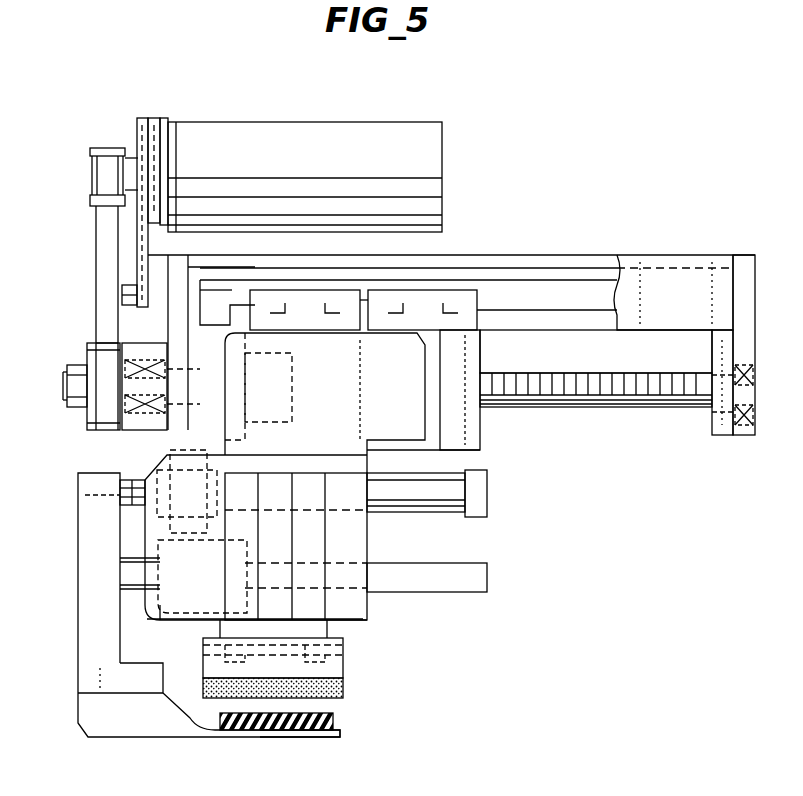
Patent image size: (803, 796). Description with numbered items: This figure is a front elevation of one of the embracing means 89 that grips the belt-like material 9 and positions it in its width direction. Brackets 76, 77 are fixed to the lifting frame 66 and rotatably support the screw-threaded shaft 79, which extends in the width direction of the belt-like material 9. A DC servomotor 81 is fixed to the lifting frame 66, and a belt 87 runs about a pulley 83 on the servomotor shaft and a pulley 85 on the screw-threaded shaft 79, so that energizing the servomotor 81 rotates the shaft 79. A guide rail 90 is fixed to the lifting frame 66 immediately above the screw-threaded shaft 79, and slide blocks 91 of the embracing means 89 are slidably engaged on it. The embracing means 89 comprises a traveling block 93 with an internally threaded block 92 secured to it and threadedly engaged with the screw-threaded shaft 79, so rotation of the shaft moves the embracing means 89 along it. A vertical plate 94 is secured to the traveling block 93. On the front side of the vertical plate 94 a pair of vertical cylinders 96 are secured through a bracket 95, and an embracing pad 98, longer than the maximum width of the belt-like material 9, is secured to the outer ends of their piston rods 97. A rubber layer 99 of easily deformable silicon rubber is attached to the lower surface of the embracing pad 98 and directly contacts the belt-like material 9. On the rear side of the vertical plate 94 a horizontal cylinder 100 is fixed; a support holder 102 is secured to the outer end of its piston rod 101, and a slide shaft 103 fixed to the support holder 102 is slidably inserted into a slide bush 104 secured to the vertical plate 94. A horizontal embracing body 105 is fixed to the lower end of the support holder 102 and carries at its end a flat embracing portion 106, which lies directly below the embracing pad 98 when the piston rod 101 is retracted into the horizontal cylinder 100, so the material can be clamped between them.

The belt-like material 9 is at (333, 720).
The lifting frame 66 is at (665, 262).
The bracket 76 is at (158, 260).
The bracket 77 is at (745, 262).
The screw-threaded shaft 79 is at (630, 402).
The DC servomotor 81 is at (330, 122).
The pulley 83 is at (97, 148).
The pulley 85 is at (87, 355).
The belt 87 is at (103, 282).
The embracing means 89 is at (404, 625).
The guide rail 90 is at (542, 290).
The slide block 91 is at (312, 318).
The internally threaded block 92 is at (292, 393).
The traveling block 93 is at (480, 432).
The vertical plate 94 is at (440, 365).
The bracket 95 is at (280, 480).
The vertical cylinder 96 is at (316, 538).
The piston rod 97 is at (240, 618).
The embracing pad 98 is at (343, 668).
The rubber layer 99 is at (343, 690).
The horizontal cylinder 100 is at (487, 500).
The piston rod 101 is at (140, 485).
The support holder 102 is at (90, 590).
The slide shaft 103 is at (488, 563).
The slide bush 104 is at (162, 607).
The horizontal embracing body 105 is at (103, 730).
The flat embracing portion 106 is at (290, 740).